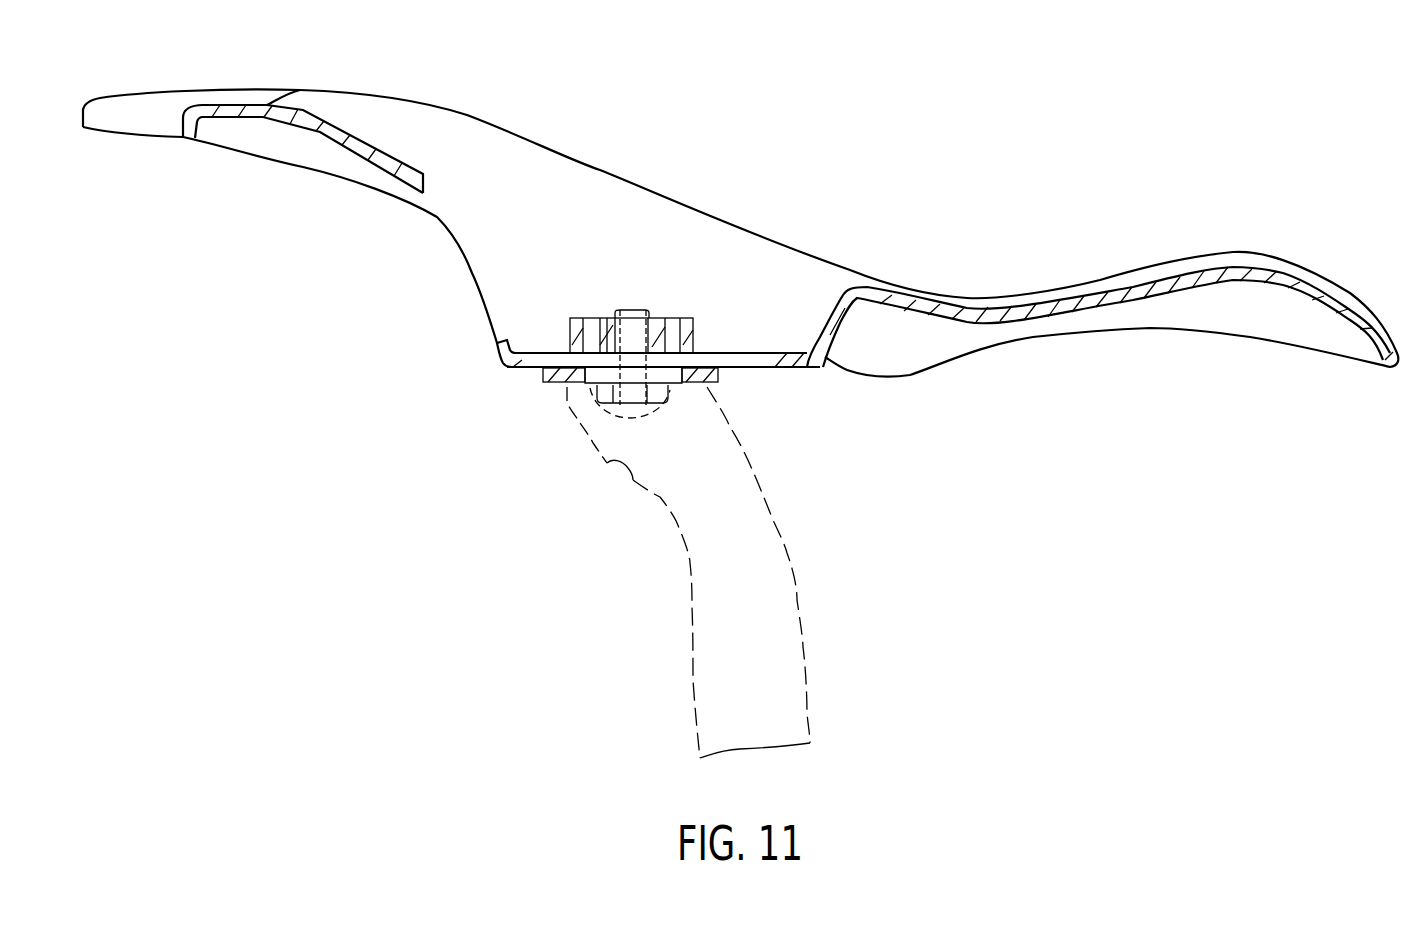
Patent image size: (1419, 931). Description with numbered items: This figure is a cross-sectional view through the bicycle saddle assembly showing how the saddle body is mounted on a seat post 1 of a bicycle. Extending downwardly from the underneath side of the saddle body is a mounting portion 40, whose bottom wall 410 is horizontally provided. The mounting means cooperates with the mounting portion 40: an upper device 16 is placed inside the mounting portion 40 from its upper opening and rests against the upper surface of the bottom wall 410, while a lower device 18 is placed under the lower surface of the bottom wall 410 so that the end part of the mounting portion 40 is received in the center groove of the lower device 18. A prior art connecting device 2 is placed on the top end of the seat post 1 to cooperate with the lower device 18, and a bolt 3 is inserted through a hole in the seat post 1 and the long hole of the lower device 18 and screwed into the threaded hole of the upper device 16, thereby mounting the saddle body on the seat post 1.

The seat post 1 is at (773, 523).
The connecting device 2 is at (590, 395).
The bolt 3 is at (623, 478).
The upper device 16 is at (658, 318).
The lower device 18 is at (543, 382).
The mounting portion 40 is at (472, 273).
The bottom wall 410 is at (522, 360).